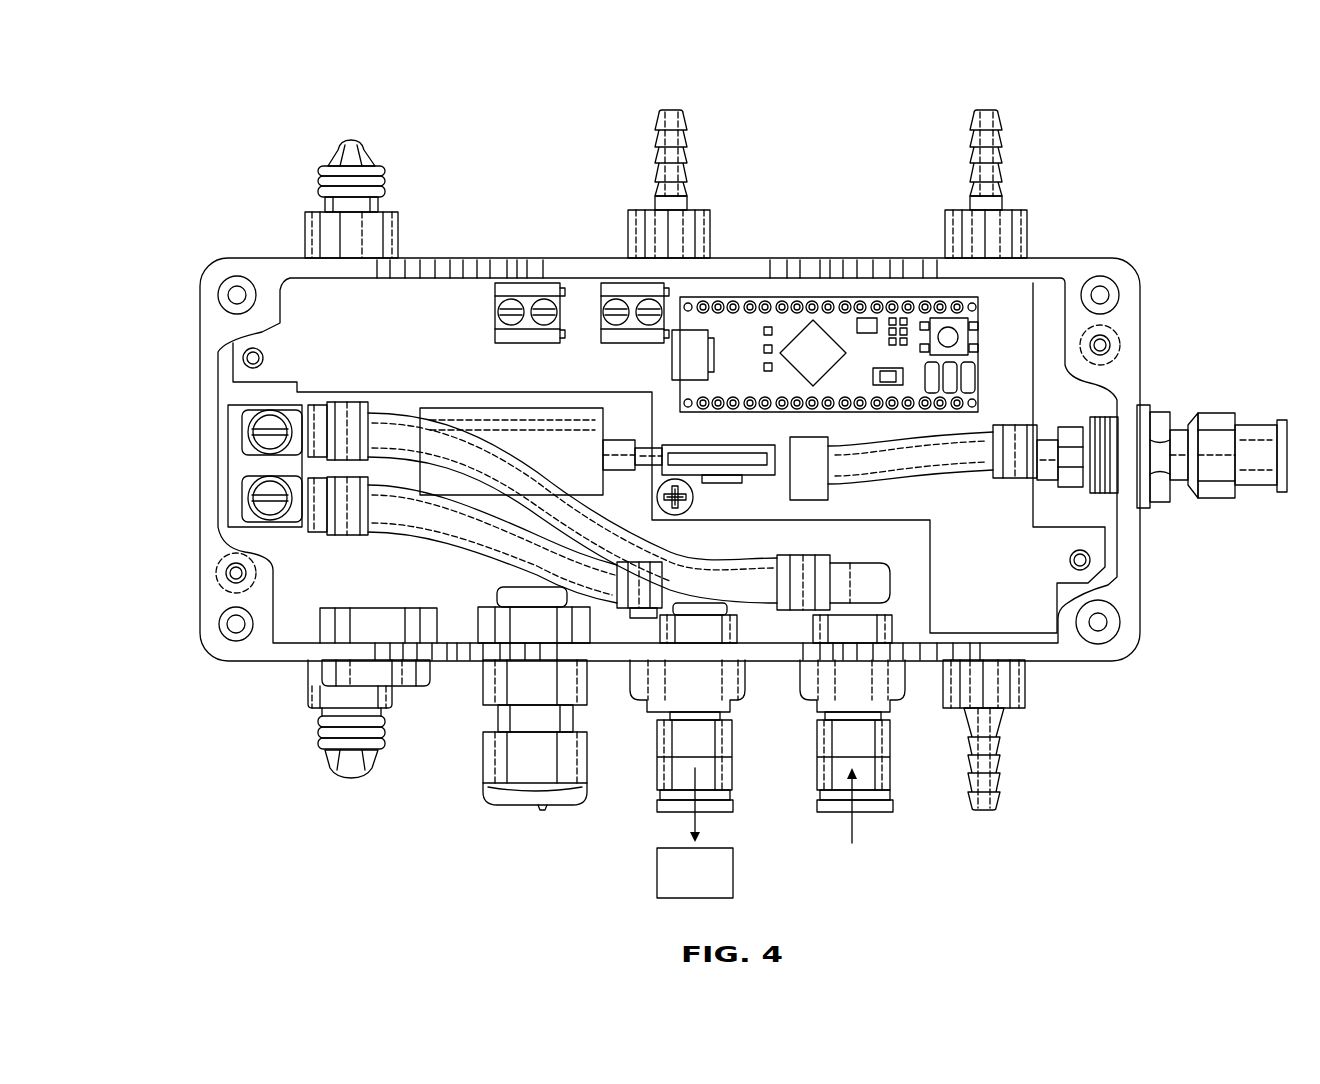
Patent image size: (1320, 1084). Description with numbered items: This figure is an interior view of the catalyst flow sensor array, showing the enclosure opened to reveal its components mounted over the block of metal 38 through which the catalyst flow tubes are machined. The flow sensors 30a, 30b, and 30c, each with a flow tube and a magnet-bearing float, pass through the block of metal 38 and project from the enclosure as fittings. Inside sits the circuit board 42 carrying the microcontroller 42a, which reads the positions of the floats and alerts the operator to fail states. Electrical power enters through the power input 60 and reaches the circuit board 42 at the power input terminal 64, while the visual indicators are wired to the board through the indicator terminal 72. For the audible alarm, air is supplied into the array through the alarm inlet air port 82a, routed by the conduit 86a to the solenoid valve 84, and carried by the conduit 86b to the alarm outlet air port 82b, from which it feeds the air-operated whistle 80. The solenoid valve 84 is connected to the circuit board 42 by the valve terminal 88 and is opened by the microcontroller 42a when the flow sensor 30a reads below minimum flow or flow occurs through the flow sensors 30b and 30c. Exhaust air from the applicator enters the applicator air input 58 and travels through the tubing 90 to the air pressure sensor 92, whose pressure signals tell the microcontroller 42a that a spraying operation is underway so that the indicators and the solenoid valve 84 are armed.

The flow sensor 30a is at (353, 136).
The flow sensor 30b is at (671, 100).
The flow sensor 30c is at (985, 100).
The block of metal 38 is at (200, 297).
The circuit board 42 is at (1010, 310).
The microcontroller 42a is at (837, 328).
The applicator air input 58 is at (1210, 412).
The power input 60 is at (520, 790).
The power input terminal 64 is at (540, 283).
The indicator terminal 72 is at (755, 478).
The whistle 80 is at (695, 873).
The alarm inlet air port 82a is at (888, 775).
The alarm outlet air port 82b is at (663, 773).
The solenoid valve 84 is at (540, 435).
The conduit 86a is at (423, 432).
The conduit 86b is at (400, 527).
The valve terminal 88 is at (612, 283).
The tubing 90 is at (948, 480).
The air pressure sensor 92 is at (809, 468).